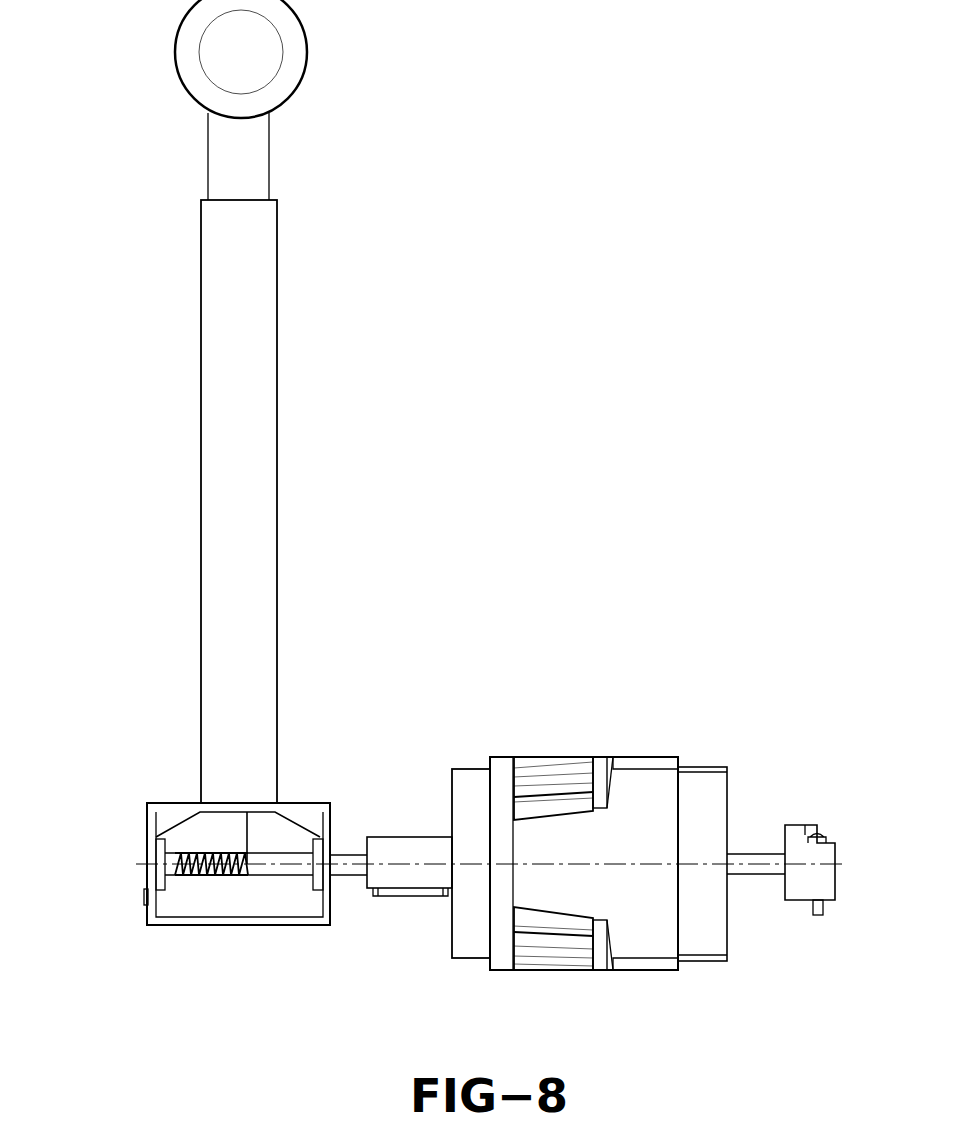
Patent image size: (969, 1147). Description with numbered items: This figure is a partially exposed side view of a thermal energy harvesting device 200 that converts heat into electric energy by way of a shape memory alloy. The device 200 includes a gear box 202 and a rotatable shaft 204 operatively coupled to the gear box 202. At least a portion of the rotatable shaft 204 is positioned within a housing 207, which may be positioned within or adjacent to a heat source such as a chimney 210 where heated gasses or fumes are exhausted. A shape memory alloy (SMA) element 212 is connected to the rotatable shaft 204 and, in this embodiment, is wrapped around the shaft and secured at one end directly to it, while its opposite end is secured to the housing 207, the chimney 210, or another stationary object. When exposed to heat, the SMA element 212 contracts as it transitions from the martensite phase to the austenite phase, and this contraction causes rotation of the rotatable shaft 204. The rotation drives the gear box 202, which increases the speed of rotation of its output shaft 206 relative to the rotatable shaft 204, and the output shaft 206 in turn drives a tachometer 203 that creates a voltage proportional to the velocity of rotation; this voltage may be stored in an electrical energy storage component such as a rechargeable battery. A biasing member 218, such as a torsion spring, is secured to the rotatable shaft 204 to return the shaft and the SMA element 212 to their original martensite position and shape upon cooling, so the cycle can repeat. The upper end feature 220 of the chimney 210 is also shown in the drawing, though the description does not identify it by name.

The thermal energy harvesting device 200 is at (586, 358).
The gear box 202 is at (573, 757).
The tachometer 203 is at (835, 877).
The rotatable shaft 204 is at (340, 853).
The output shaft 206 is at (745, 855).
The housing 207 is at (197, 925).
The chimney 210 is at (277, 445).
The shape memory alloy (SMA) element 212 is at (245, 833).
The biasing member 218 is at (146, 898).
The eyelet connector 220 is at (268, 157).